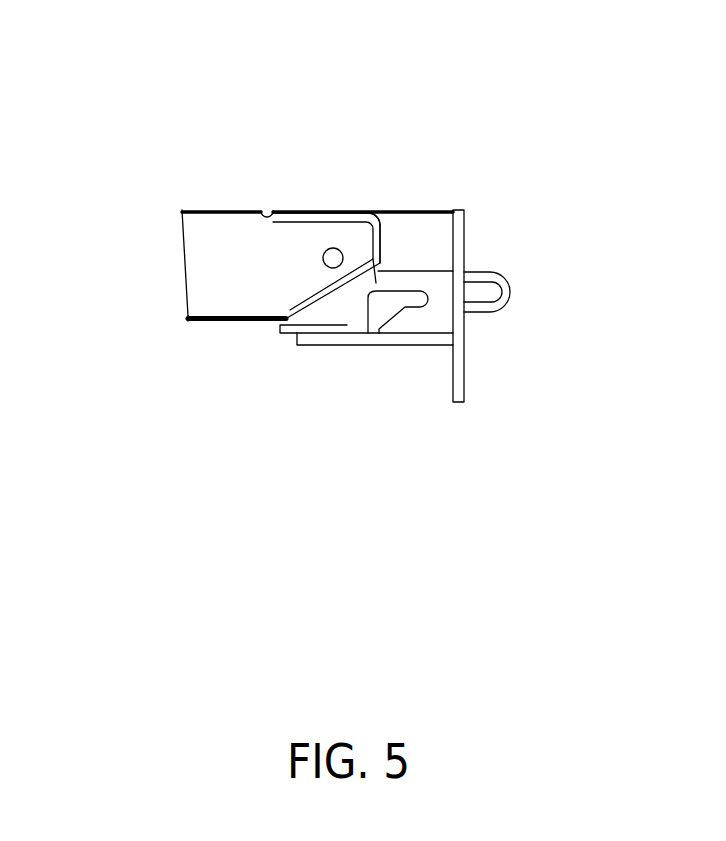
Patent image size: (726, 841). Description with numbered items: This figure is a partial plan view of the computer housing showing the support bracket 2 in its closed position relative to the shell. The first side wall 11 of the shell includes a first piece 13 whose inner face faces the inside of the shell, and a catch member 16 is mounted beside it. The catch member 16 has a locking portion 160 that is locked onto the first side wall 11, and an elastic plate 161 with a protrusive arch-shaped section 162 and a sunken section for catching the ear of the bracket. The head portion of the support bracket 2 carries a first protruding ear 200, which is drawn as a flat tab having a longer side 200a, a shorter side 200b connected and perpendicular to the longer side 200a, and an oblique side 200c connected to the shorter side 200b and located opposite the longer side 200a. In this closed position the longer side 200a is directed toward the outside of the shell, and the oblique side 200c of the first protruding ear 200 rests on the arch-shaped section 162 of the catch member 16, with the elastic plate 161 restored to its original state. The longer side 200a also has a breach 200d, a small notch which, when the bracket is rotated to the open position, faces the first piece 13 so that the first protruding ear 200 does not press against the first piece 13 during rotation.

The support bracket 2 is at (255, 240).
The first protruding ear 200 is at (298, 223).
The longer side 200a is at (318, 211).
The shorter side 200b is at (385, 222).
The oblique side 200c is at (330, 296).
The breach 200d is at (268, 206).
The first side wall 11 is at (470, 228).
The first piece 13 is at (376, 283).
The catch member 16 is at (430, 309).
The locking portion 160 is at (503, 300).
The elastic plate 161 is at (366, 312).
The arch-shaped section 162 is at (437, 222).